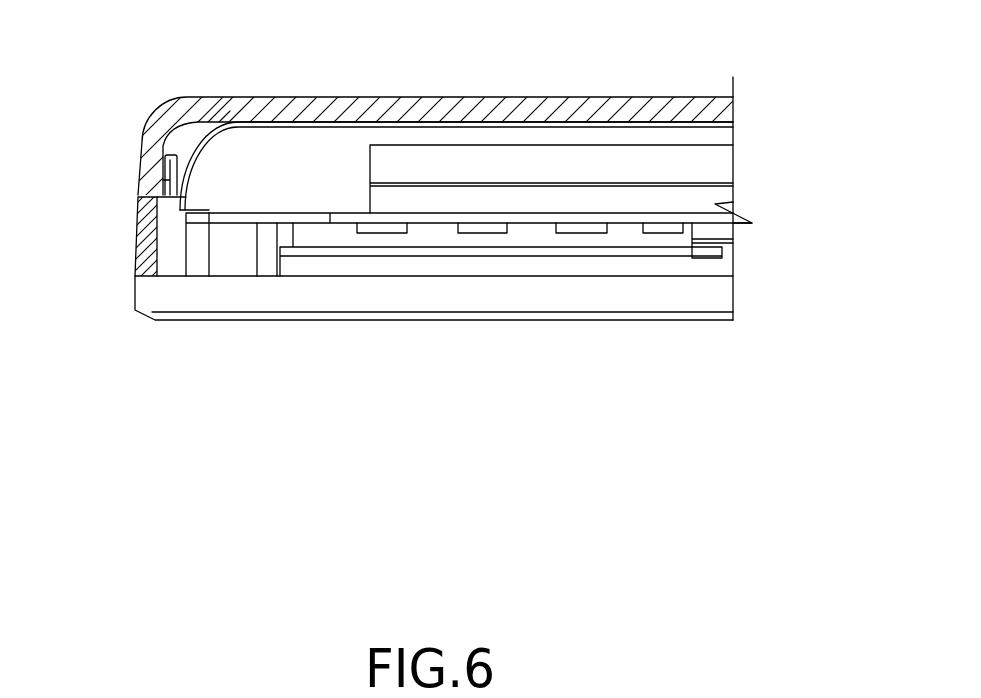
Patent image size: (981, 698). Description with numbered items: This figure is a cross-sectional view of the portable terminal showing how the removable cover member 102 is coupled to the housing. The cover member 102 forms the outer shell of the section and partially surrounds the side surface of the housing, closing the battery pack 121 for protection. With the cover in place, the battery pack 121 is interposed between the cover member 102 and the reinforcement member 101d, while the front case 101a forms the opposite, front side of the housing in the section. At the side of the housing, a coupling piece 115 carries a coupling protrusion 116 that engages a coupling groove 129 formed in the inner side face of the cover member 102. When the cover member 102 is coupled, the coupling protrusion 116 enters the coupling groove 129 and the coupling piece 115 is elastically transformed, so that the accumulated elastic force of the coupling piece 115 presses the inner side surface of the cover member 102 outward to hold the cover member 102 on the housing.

The cover member 102 is at (503, 107).
The coupling groove 129 is at (188, 126).
The coupling protrusion 116 is at (163, 167).
The coupling piece 115 is at (165, 200).
The battery pack 121 is at (716, 168).
The reinforcement member 101d is at (345, 217).
The front case 101a is at (467, 297).